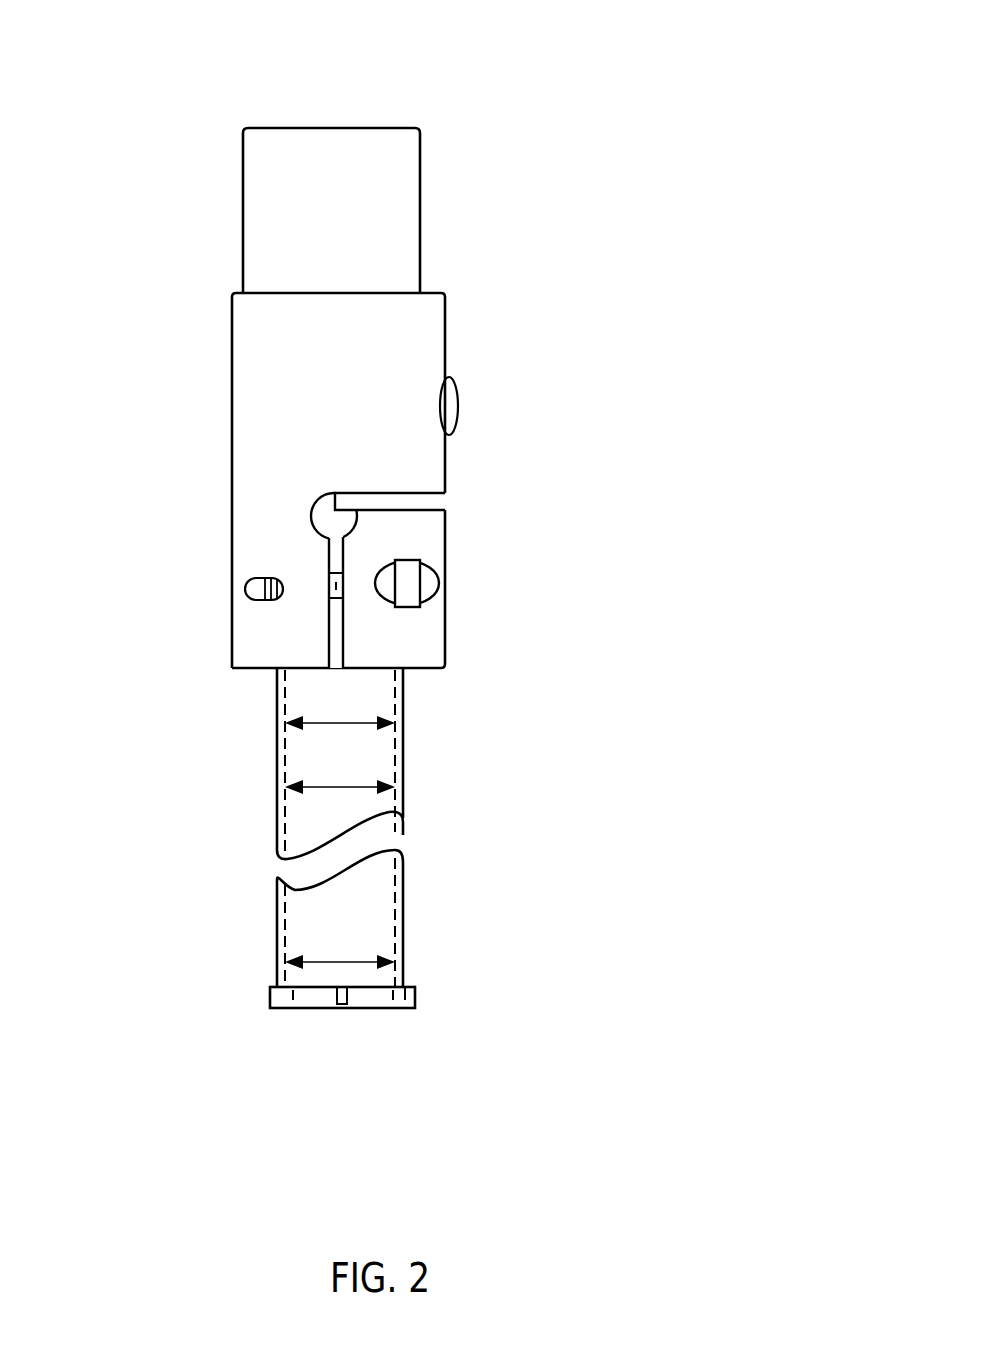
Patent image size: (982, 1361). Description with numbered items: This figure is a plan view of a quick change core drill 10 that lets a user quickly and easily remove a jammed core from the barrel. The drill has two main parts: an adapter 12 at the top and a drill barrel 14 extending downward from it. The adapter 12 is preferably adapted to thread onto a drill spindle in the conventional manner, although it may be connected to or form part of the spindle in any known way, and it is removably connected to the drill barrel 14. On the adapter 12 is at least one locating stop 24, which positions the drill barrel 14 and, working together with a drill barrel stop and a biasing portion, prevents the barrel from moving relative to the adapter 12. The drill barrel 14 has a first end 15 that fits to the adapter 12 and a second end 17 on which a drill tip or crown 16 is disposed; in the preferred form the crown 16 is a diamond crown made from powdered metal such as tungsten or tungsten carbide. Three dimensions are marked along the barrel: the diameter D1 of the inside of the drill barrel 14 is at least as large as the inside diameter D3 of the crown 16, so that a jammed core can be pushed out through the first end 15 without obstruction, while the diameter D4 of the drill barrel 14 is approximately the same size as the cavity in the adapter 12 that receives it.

The quick change core drill 10 is at (704, 104).
The adapter 12 is at (607, 312).
The locating stop 24 is at (458, 403).
The first end 15 is at (614, 580).
The drill barrel 14 is at (589, 864).
The second end 17 is at (248, 957).
The drill tip or crown 16 is at (390, 1010).
The diameter of the inside of the drill barrel D1 is at (338, 723).
The diameter of the drill barrel D4 is at (342, 787).
The inside diameter of the crown D3 is at (340, 962).